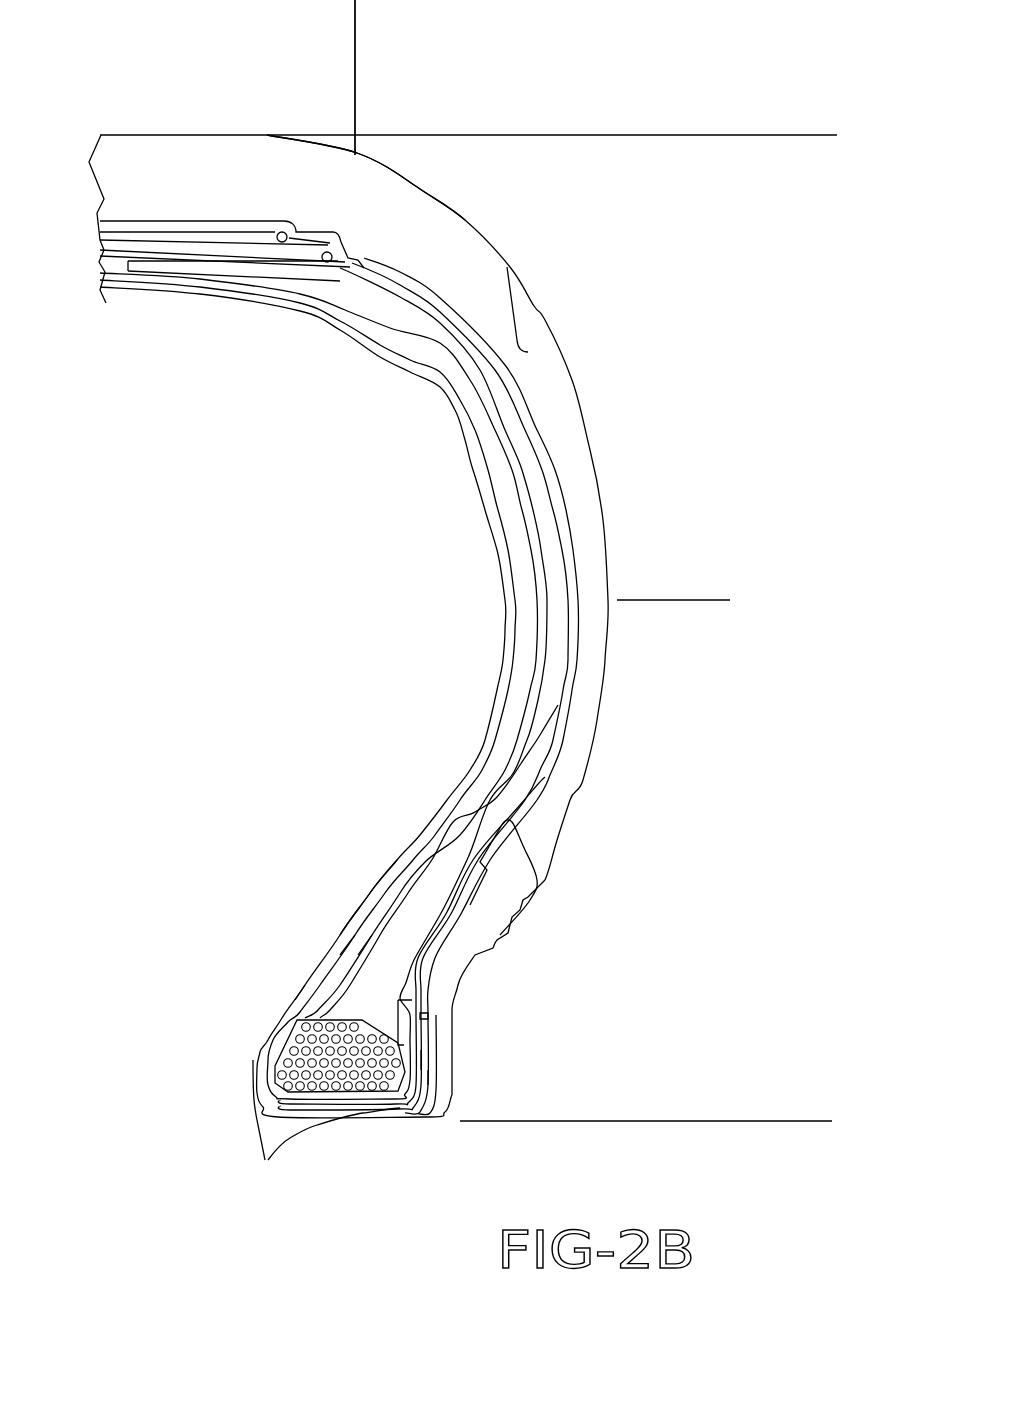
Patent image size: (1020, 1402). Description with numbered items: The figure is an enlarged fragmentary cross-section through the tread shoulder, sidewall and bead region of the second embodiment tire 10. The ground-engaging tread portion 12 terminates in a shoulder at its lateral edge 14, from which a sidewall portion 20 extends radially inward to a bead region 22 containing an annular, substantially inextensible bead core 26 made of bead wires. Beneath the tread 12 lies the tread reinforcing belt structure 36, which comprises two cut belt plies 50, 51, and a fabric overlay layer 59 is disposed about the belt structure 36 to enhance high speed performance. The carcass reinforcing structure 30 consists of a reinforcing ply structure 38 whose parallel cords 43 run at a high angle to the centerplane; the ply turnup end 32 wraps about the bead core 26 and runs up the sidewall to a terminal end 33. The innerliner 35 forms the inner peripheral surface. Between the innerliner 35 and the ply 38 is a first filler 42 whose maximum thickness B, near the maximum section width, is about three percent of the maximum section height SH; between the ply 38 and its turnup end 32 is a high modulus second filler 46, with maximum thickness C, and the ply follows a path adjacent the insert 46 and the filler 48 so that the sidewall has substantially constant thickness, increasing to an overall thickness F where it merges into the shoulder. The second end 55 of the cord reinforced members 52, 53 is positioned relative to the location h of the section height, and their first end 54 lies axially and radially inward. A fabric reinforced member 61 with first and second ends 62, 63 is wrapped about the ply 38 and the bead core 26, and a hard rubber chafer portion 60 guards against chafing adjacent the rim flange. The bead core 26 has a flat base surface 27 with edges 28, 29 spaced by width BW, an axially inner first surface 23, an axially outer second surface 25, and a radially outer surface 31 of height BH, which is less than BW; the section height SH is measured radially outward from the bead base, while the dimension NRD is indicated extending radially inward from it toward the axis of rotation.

The tire 10 is at (396, 100).
The tread portion 12 is at (122, 135).
The lateral edge of tread 14 is at (358, 153).
The sidewall portion 20 is at (607, 543).
The bead region 22 is at (365, 982).
The axially inner first surface 23 is at (278, 1055).
The axially outer second surface 25 is at (416, 1062).
The bead core 26 is at (330, 1053).
The flat base surface 27 is at (377, 1093).
The edge of flat base surface 28 is at (298, 1093).
The edge of flat base surface 29 is at (412, 1085).
The carcass reinforcing structure 30 is at (193, 283).
The radially outer surface 31 is at (400, 998).
The ply turnup end 32 is at (541, 440).
The terminal end 33 is at (137, 266).
The innerliner 35 is at (377, 890).
The tread reinforcing belt structure 36 is at (140, 223).
The reinforcing ply structure 38 is at (523, 487).
The first filler 42 is at (523, 572).
The cords 43 is at (537, 533).
The second filler 46 is at (543, 522).
The filler 48 is at (448, 863).
The belt ply 50 is at (258, 237).
The belt ply 51 is at (260, 250).
The axially outer component of cord reinforced member 52 is at (482, 875).
The axially inner component of cord reinforced member 53 is at (490, 848).
The first end of cord reinforced member 54 is at (422, 1032).
The second end of cord reinforced member 55 is at (508, 827).
The fabric overlay layer 59 is at (200, 223).
The hard rubber chafer portion 60 is at (475, 955).
The fabric reinforced member 61 is at (300, 995).
The first end of fabric reinforced member 62 is at (347, 928).
The second end of fabric reinforced member 63 is at (428, 1016).
The tread width TW is at (130, 16).
The maximum section height SH is at (818, 1121).
The section height location h is at (709, 1121).
The nominal rim diameter NRD is at (818, 1121).
The maximum height of radially outer surface BH is at (148, 1018).
The width of flat base surface BW is at (273, 1093).
The overall thickness in shoulder region F is at (463, 222).
The maximum thickness of second filler C is at (465, 410).
The maximum thickness of first filler B is at (587, 588).